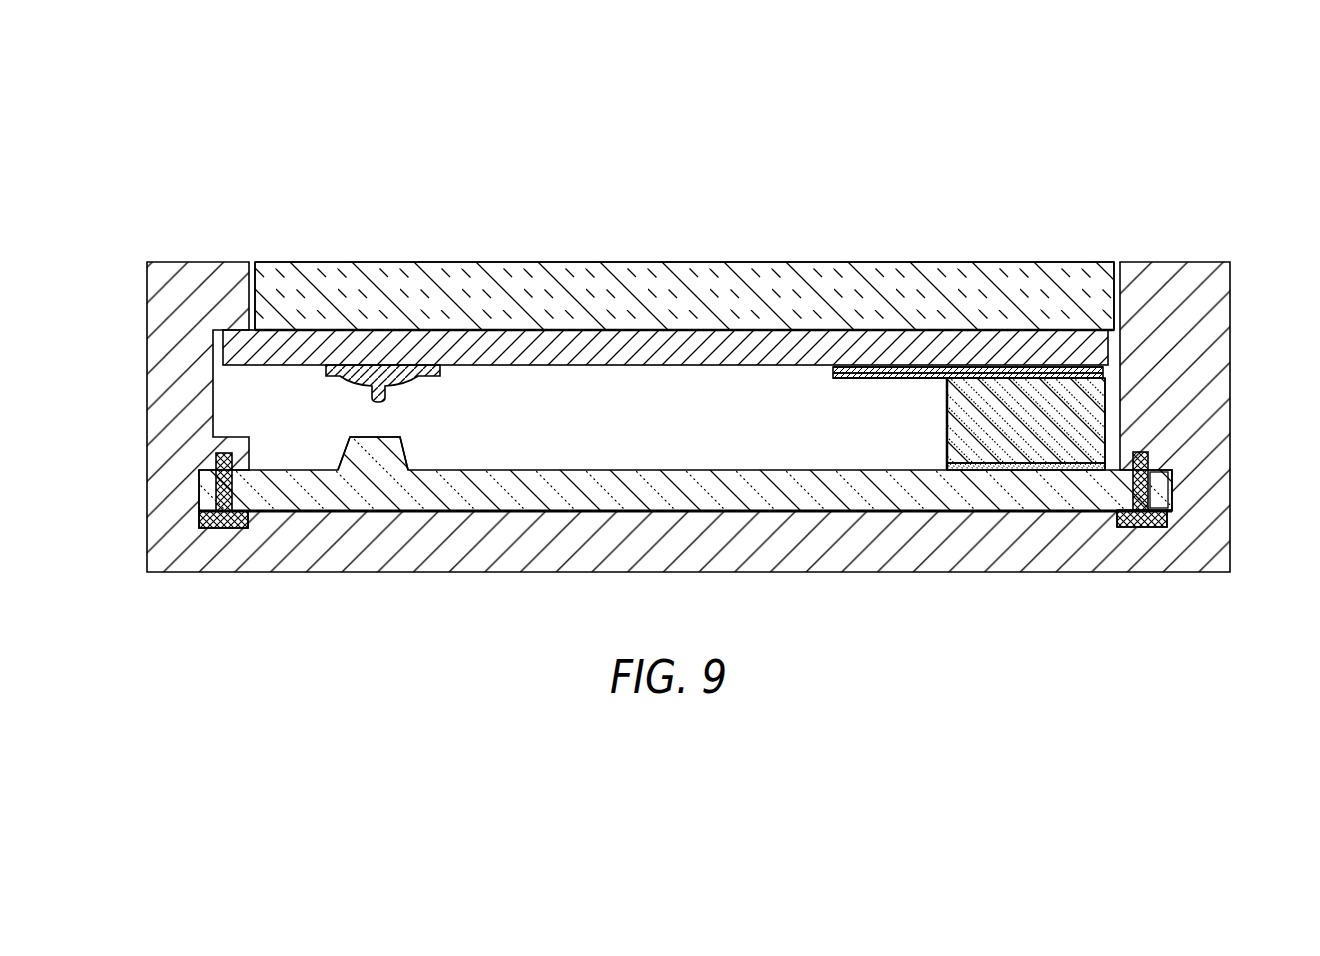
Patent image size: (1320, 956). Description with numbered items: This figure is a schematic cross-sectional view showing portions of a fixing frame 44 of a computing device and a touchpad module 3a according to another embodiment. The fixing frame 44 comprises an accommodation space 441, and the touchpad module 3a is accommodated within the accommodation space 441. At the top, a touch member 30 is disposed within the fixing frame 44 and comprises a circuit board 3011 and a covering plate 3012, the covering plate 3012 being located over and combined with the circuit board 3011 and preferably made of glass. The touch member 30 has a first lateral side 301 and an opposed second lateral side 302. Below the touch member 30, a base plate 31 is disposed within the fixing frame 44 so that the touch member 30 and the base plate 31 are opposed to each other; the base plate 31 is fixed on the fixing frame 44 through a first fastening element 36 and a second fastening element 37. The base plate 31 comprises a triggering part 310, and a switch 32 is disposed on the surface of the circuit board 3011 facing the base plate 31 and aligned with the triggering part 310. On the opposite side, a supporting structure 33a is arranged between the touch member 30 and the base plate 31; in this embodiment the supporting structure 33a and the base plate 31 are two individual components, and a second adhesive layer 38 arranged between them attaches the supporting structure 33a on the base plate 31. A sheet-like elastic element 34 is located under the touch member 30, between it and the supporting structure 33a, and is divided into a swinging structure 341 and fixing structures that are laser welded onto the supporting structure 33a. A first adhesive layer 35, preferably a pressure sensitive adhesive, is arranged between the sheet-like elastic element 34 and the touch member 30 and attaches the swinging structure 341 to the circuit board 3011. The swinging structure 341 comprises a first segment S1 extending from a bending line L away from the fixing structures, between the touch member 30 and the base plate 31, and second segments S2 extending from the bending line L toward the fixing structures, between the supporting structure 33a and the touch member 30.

The touch member 30 is at (192, 48).
The first lateral side 301 is at (1096, 282).
The second lateral side 302 is at (278, 296).
The circuit board 3011 is at (445, 352).
The covering plate 3012 is at (543, 300).
The touchpad module 3a is at (724, 238).
The fixing frame 44 is at (197, 278).
The accommodation space 441 is at (612, 390).
The switch 32 is at (372, 378).
The sheet-like elastic element 34 is at (968, 276).
The swinging structure 341 is at (1000, 215).
The first segment S1 is at (890, 366).
The second segment S2 is at (976, 366).
The first adhesive layer 35 is at (1043, 367).
The supporting structure 33a is at (1103, 415).
The second adhesive layer 38 is at (1000, 472).
The bending line L is at (936, 389).
The base plate 31 is at (785, 490).
The triggering part 310 is at (403, 448).
The second fastening element 37 is at (232, 530).
The first fastening element 36 is at (1147, 528).